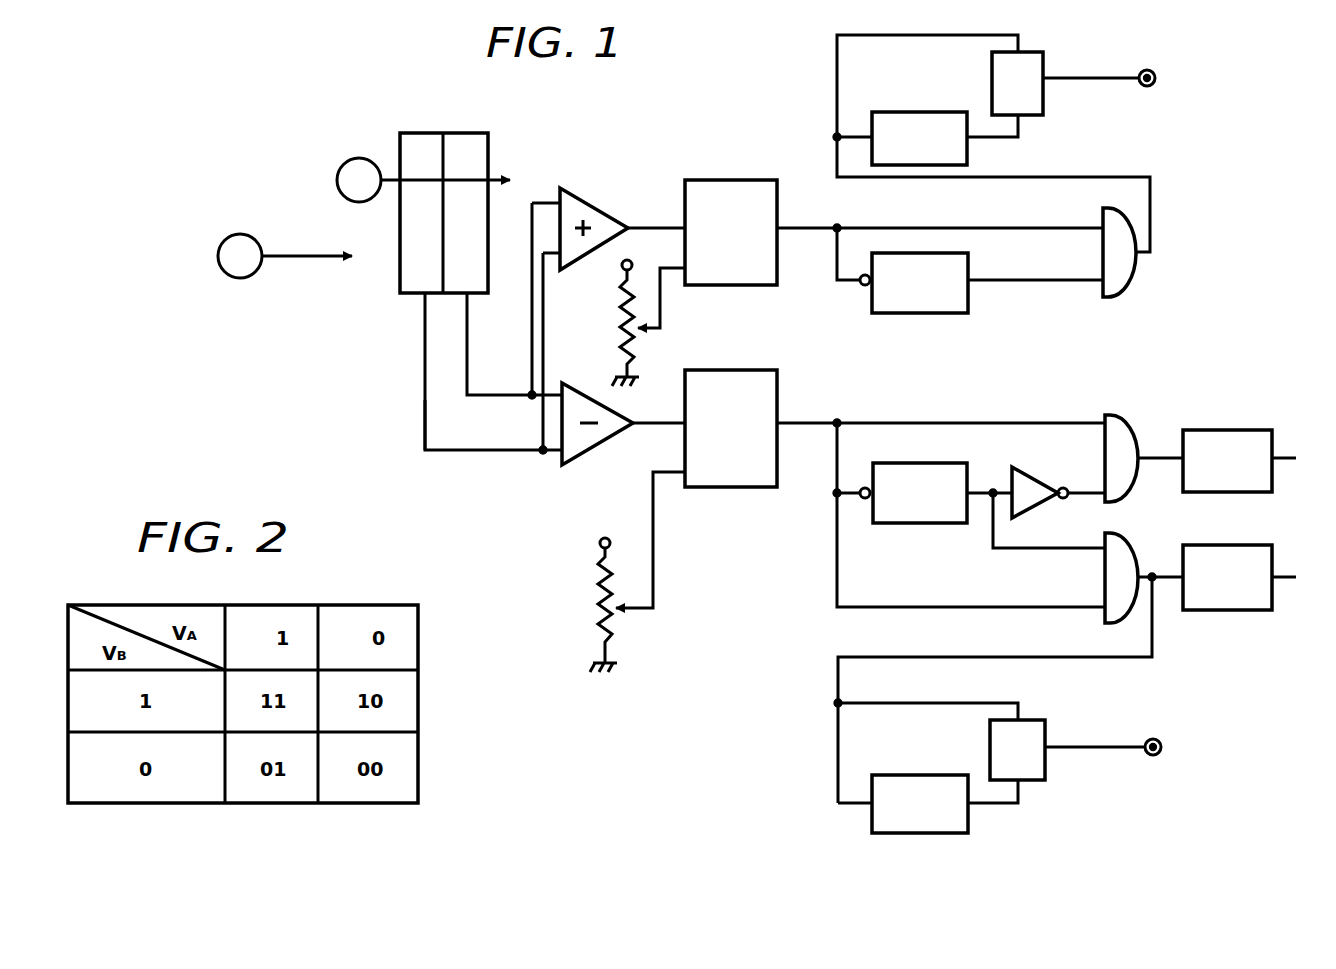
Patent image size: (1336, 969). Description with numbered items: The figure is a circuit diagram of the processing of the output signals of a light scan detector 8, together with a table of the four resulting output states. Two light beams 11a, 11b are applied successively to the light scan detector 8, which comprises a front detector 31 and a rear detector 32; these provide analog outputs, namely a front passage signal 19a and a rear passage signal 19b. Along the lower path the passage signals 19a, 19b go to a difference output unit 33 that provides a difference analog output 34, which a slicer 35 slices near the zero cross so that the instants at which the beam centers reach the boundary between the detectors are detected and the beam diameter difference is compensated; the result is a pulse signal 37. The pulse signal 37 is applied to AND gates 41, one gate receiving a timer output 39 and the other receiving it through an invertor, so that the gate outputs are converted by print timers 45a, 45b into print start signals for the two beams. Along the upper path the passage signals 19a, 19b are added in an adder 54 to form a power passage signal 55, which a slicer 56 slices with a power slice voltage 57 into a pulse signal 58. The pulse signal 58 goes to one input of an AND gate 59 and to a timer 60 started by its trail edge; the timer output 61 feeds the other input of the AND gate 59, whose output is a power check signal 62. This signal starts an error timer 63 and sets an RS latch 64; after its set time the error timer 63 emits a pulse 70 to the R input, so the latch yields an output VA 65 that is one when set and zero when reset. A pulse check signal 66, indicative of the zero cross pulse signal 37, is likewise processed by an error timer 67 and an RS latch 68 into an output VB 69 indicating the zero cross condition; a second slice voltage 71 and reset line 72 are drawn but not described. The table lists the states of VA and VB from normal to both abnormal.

The light scan detector 8 is at (442, 133).
The light beam 11a is at (351, 158).
The light beam 11b is at (240, 234).
The front passage signal 19a is at (425, 400).
The rear passage signal 19b is at (473, 402).
The front detector 31 is at (414, 295).
The rear detector 32 is at (488, 141).
The difference output unit 33 is at (581, 462).
The difference analog output 34 is at (647, 425).
The slicer 35 is at (757, 487).
The pulse signal 37 is at (837, 590).
The timer output 39 is at (1086, 548).
The AND gates 41 is at (1129, 421).
The print timer 45a is at (1210, 429).
The print timer 45b is at (1205, 610).
The adder 54 is at (594, 202).
The power passage signal 55 is at (648, 228).
The slicer 56 is at (757, 180).
The power slice voltage 57 is at (650, 342).
The pulse signal 58 is at (800, 232).
The AND gate 59 is at (1134, 273).
The timer 60 is at (955, 313).
The timer output 61 is at (1035, 282).
The power check signal 62 is at (1150, 192).
The error timer 63 is at (945, 112).
The RS latch 64 is at (1042, 54).
The output VA 65 is at (1164, 64).
The pulse check signal 66 is at (838, 673).
The error timer 67 is at (955, 834).
The RS latch 68 is at (1045, 772).
The output VB 69 is at (1170, 762).
The pulse 70 is at (1020, 132).
The second threshold potentiometer 71 is at (619, 620).
The second reset line 72 is at (1000, 810).